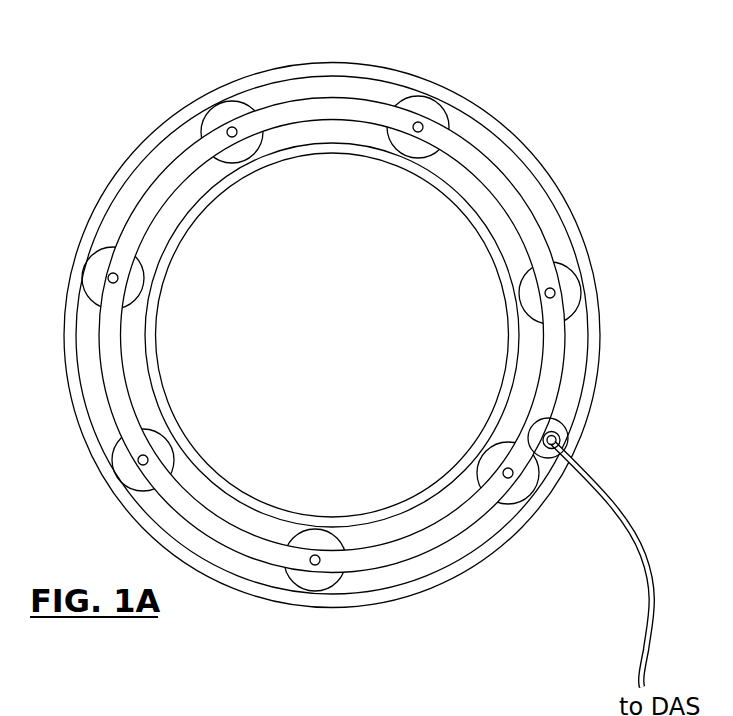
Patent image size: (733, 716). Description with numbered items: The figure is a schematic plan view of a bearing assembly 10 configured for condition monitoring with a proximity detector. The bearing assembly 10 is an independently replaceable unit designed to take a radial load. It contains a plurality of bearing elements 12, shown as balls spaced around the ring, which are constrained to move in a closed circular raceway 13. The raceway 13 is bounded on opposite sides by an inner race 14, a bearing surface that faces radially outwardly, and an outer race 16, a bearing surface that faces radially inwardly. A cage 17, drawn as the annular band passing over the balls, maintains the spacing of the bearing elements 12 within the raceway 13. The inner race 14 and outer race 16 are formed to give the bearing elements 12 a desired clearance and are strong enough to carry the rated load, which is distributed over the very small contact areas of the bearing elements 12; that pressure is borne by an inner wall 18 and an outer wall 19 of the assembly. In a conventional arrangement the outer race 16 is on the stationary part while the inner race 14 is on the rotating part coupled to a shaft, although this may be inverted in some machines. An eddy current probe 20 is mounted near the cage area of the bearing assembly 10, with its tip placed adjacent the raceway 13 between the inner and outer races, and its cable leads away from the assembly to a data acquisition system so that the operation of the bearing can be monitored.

The bearing assembly 10 is at (625, 62).
The bearing elements 12 is at (570, 289).
The raceway 13 is at (327, 80).
The inner race 14 is at (472, 197).
The outer race 16 is at (503, 151).
The cage 17 is at (142, 213).
The inner wall 18 is at (278, 157).
The outer wall 19 is at (430, 87).
The eddy current probe 20 is at (538, 430).